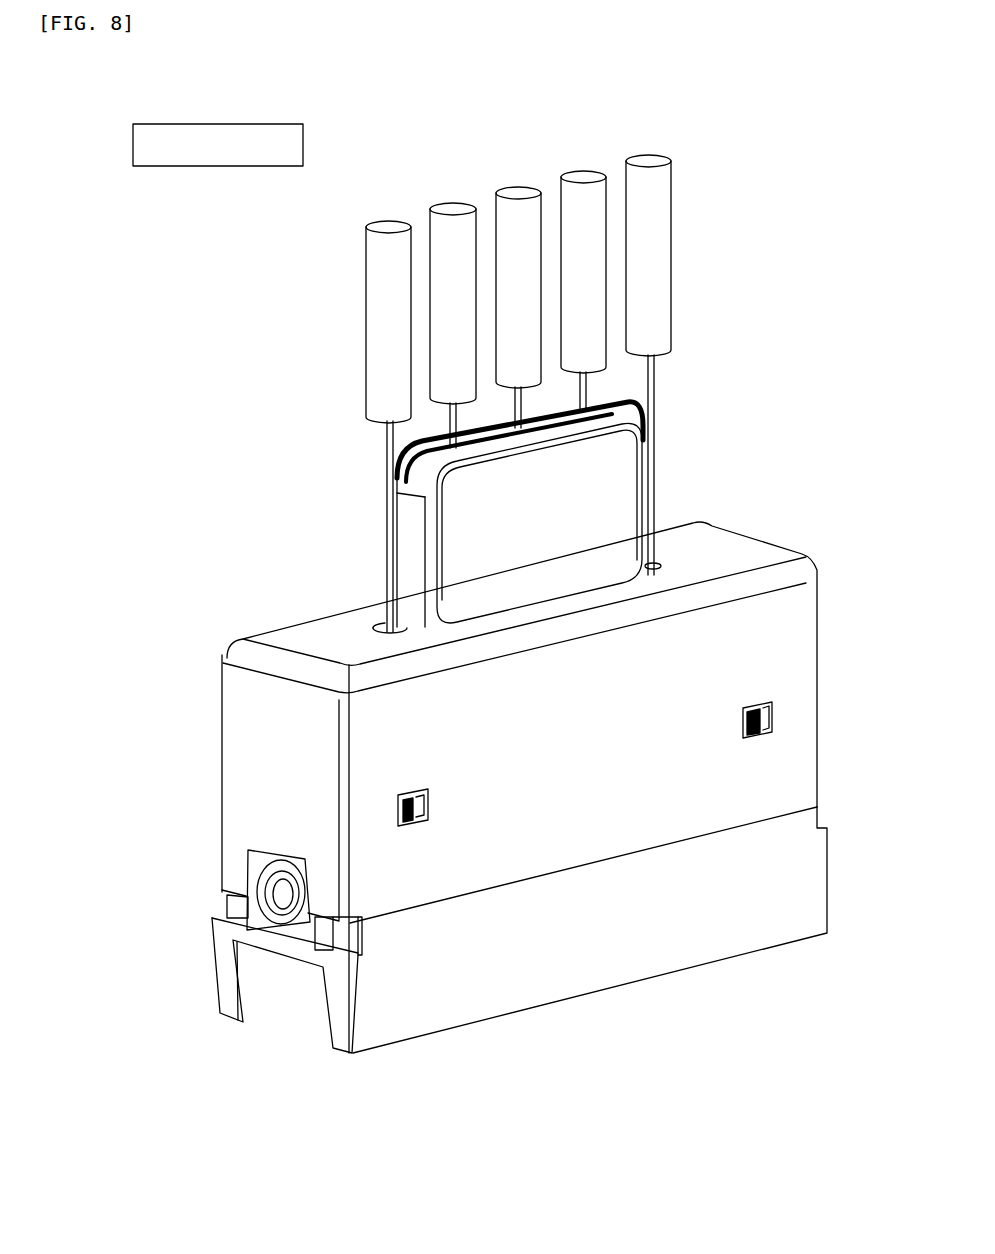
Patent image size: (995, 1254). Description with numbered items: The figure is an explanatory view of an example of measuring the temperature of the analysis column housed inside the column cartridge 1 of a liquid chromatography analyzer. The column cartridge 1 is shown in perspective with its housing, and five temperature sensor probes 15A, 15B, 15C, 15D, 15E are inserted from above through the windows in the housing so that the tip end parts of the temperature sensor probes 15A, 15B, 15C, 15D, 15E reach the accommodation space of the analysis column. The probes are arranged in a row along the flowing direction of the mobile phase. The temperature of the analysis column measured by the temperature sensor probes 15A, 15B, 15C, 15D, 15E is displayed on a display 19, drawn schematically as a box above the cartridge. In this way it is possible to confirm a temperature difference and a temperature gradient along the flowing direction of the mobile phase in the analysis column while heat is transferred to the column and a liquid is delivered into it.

The column cartridge 1 is at (724, 549).
The display 19 is at (133, 124).
The temperature sensor probe 15A is at (385, 522).
The temperature sensor probe 15B is at (452, 449).
The temperature sensor probe 15C is at (512, 403).
The temperature sensor probe 15D is at (592, 384).
The temperature sensor probe 15E is at (655, 372).